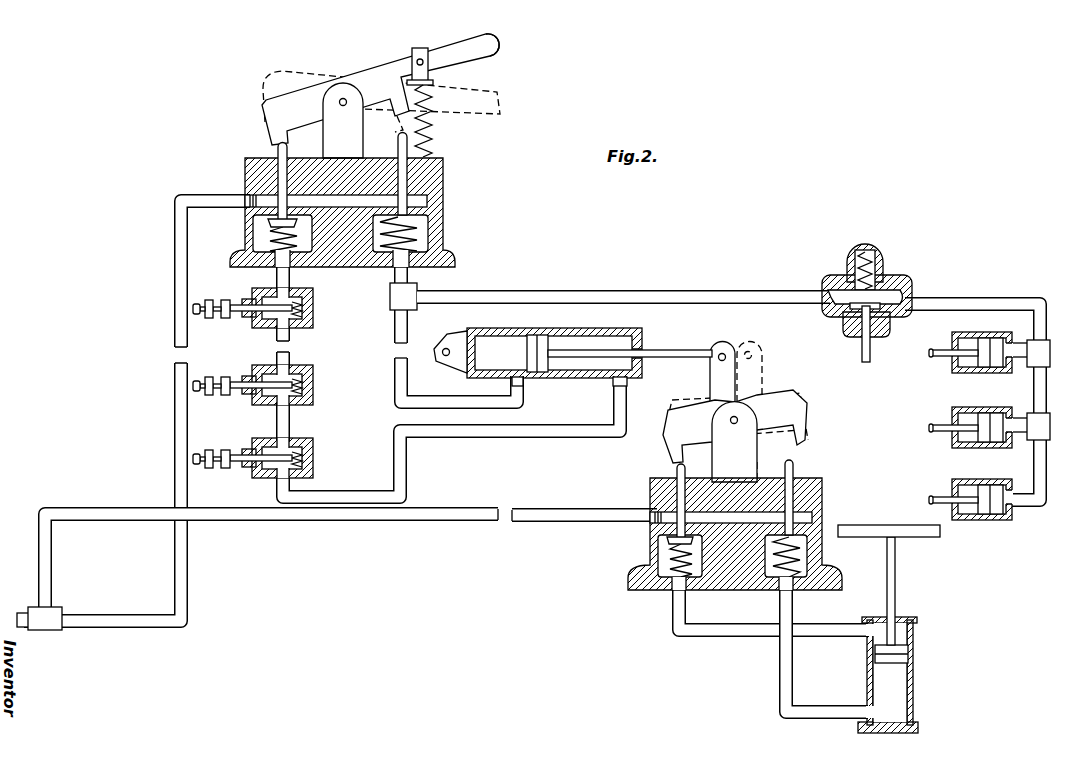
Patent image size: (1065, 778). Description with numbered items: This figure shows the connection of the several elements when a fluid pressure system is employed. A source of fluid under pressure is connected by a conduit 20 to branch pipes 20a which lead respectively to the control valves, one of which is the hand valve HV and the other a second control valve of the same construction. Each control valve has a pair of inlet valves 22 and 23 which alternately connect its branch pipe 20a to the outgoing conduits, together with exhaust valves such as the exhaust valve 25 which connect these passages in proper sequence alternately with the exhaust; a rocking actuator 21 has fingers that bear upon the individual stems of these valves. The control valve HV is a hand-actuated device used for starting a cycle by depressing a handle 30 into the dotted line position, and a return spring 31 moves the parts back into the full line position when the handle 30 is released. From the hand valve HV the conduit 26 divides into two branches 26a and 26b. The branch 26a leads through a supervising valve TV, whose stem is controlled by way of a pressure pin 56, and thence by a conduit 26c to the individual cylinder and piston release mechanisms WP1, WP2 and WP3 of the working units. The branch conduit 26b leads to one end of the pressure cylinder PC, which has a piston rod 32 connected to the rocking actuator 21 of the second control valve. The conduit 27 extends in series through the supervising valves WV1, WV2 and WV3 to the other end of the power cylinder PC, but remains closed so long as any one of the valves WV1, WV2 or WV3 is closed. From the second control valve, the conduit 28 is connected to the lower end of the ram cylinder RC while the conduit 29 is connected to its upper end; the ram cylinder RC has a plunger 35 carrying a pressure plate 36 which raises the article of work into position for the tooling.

The conduit 20 is at (22, 612).
The branch pipe 20a is at (125, 506).
The rocking actuator 21 is at (371, 74).
The inlet valve 22 is at (408, 153).
The inlet valve 23 is at (272, 152).
The exhaust valve 25 is at (672, 470).
The conduit 26 is at (415, 271).
The branch 26a is at (589, 287).
The branch conduit 26b is at (417, 329).
The conduit 26c is at (964, 293).
The conduit 27 is at (276, 287).
The conduit 28 is at (781, 690).
The conduit 29 is at (737, 641).
The handle 30 is at (493, 41).
The return spring 31 is at (438, 137).
The piston rod 32 is at (680, 352).
The plunger 35 is at (900, 571).
The pressure plate 36 is at (860, 531).
The pressure pin 56 is at (862, 358).
The control valve HV is at (446, 186).
The supervising valve TV is at (873, 246).
The pressure cylinder PC is at (538, 347).
The ram cylinder RC is at (915, 662).
The supervising valve WV1 is at (313, 461).
The supervising valve WV2 is at (313, 389).
The supervising valve WV3 is at (313, 312).
The cylinder and piston release mechanism WP1 is at (985, 480).
The cylinder and piston release mechanism WP2 is at (984, 408).
The cylinder and piston release mechanism WP3 is at (988, 334).